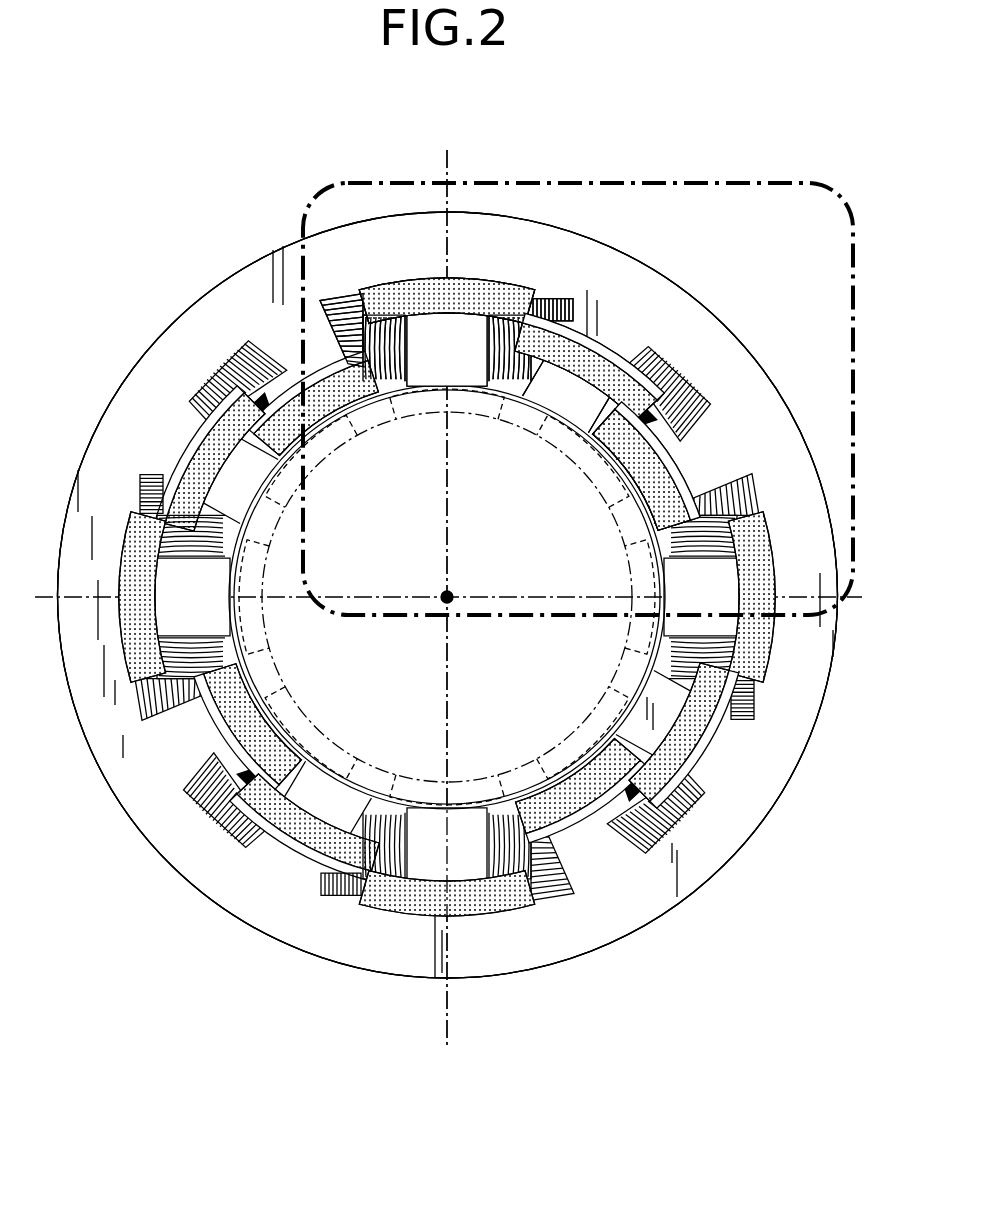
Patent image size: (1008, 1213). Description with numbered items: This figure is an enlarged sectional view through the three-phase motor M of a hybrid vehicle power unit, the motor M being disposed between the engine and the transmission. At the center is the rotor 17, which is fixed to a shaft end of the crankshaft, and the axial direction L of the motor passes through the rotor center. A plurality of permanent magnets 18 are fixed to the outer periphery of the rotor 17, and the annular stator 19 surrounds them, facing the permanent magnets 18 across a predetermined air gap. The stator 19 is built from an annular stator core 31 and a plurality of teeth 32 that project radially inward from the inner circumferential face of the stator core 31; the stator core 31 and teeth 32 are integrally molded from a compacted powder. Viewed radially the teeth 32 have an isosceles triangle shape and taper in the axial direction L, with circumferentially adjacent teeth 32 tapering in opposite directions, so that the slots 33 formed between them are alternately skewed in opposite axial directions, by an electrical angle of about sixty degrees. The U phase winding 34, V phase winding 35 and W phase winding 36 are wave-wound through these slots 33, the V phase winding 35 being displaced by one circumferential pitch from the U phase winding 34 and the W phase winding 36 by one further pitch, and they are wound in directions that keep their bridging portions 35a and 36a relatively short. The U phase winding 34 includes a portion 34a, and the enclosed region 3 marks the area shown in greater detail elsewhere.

The three-phase motor M is at (160, 298).
The stator 3 is at (314, 200).
The rotor 17 is at (530, 777).
The permanent magnets 18 is at (325, 447).
The stator 19 is at (740, 336).
The stator core 31 is at (632, 266).
The teeth 32 is at (547, 397).
The slots 33 is at (392, 360).
The U phase winding 34 is at (430, 283).
The coil end portion 34a is at (492, 263).
The V phase winding 35 is at (616, 352).
The bridging portion 35a is at (608, 350).
The W phase winding 36 is at (663, 448).
The bridging portion 36a is at (690, 480).
The axial direction L is at (452, 597).